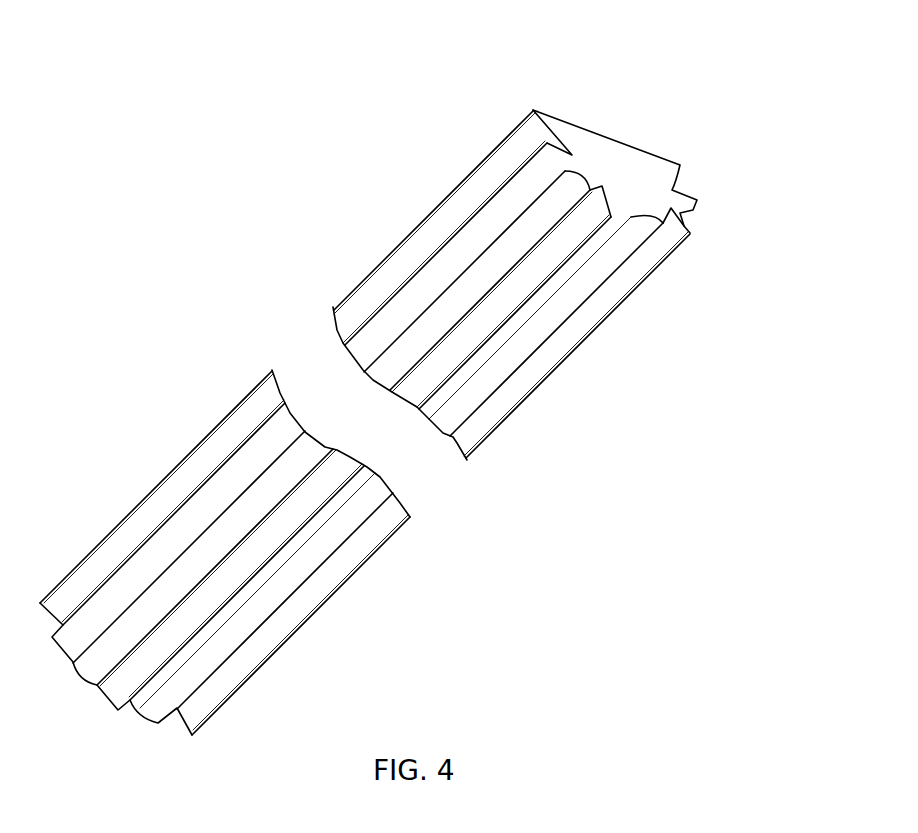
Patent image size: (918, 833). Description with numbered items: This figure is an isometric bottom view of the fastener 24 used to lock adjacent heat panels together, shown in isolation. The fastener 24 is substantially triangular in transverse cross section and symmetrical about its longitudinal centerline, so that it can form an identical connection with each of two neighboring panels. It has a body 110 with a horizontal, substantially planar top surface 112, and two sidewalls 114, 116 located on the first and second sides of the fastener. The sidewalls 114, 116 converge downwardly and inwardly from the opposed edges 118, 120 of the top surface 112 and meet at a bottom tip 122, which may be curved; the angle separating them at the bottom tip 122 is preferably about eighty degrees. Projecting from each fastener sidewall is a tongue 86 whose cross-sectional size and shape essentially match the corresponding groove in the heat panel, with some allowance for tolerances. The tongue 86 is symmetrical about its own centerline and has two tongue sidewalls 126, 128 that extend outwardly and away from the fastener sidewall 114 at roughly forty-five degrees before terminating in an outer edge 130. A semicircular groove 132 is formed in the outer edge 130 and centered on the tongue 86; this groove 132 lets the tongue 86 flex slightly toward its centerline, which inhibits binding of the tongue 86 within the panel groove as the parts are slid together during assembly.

The fastener 24 is at (360, 52).
The tongue 86 is at (218, 453).
The body 110 is at (656, 148).
The top surface 112 is at (577, 125).
The first sidewall 114 is at (468, 193).
The second sidewall 116 is at (682, 177).
The edge 118 is at (507, 135).
The edge 120 is at (680, 173).
The bottom tip 122 is at (636, 240).
The tongue sidewall 126 is at (557, 147).
The tongue sidewall 128 is at (643, 227).
The outer edge 130 is at (443, 357).
The semicircular groove 132 is at (432, 325).